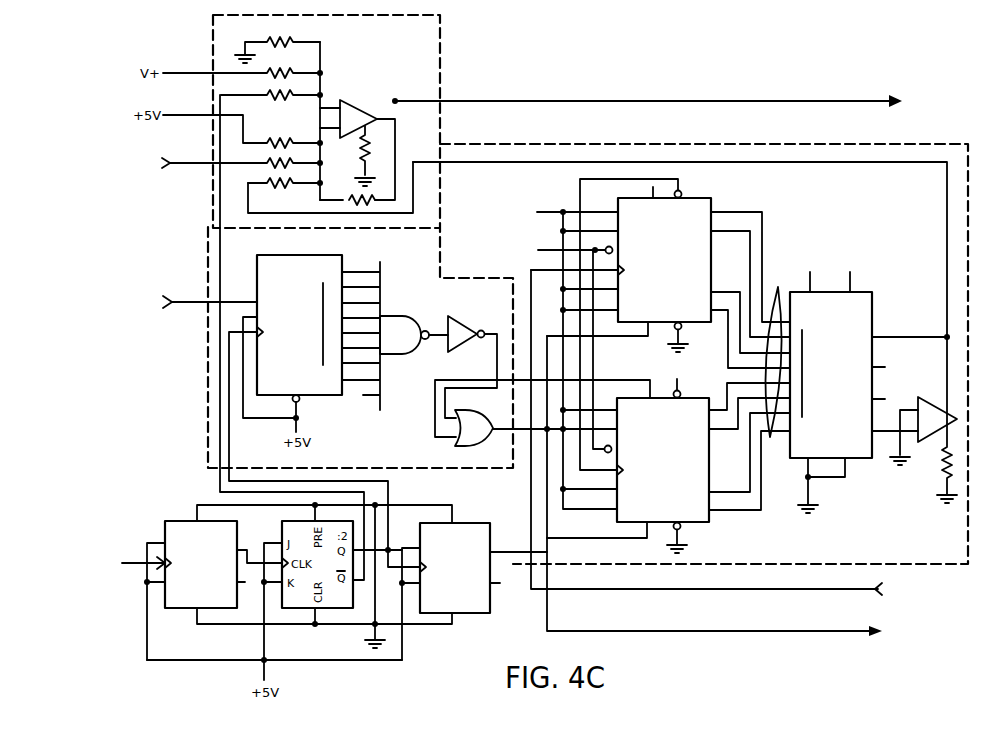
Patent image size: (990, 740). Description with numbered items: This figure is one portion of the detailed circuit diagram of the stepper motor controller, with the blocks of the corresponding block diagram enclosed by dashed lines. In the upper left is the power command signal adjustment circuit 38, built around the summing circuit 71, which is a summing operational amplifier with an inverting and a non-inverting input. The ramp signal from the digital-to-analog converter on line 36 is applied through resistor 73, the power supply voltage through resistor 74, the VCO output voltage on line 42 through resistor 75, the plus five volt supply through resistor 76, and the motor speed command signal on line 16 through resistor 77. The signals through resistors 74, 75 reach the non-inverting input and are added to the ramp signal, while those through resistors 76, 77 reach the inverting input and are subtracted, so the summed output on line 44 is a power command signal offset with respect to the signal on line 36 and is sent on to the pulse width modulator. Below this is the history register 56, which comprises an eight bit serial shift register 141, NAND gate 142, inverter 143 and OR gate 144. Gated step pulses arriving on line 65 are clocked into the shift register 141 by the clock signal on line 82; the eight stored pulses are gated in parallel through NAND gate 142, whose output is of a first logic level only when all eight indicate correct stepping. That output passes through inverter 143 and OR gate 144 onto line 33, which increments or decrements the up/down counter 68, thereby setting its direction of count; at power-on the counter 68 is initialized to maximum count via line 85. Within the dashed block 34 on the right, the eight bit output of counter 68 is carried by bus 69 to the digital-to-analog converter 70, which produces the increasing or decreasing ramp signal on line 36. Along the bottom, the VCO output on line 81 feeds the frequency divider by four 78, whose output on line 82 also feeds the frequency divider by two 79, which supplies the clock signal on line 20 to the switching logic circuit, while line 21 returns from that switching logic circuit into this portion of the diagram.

The motor speed command signal line 16 is at (183, 160).
The clock signal line 20 is at (795, 633).
The input line from 22 21 is at (797, 587).
The counter control line 33 is at (520, 430).
The digital to analog converter section 34 is at (802, 150).
The ramp signal line 36 is at (826, 163).
The power command signal adjustment circuit 38 is at (423, 50).
The VCO output voltage line 42 is at (224, 250).
The power command signal line 44 is at (770, 103).
The history register 56 is at (421, 254).
The gated pulse line 65 is at (192, 300).
The up/down counter 68 is at (660, 318).
The data bus 69 is at (751, 361).
The digital-to-analog converter 70 is at (866, 318).
The summing circuit 71 is at (360, 104).
The resistor 73 is at (285, 183).
The resistor 74 is at (278, 72).
The resistor 75 is at (285, 95).
The resistor 76 is at (277, 142).
The resistor 77 is at (285, 163).
The frequency divider by four 78 is at (292, 602).
The frequency divider by two 79 is at (468, 532).
The VCO output line 81 is at (133, 562).
The divided clock signal line 82 is at (340, 470).
The initialization line 85 is at (550, 250).
The 8 bit serial shift register 141 is at (343, 262).
The NAND gate 142 is at (397, 321).
The inverter 143 is at (467, 322).
The OR gate 144 is at (462, 444).